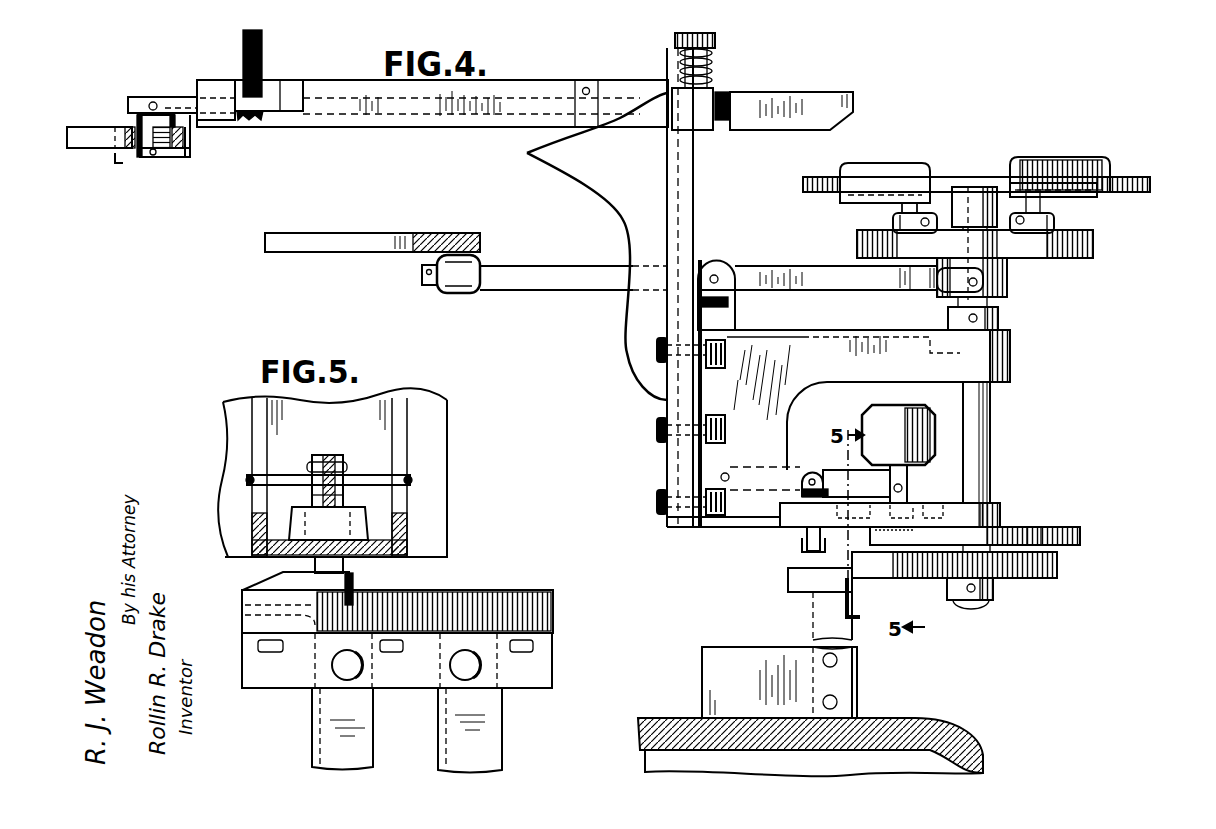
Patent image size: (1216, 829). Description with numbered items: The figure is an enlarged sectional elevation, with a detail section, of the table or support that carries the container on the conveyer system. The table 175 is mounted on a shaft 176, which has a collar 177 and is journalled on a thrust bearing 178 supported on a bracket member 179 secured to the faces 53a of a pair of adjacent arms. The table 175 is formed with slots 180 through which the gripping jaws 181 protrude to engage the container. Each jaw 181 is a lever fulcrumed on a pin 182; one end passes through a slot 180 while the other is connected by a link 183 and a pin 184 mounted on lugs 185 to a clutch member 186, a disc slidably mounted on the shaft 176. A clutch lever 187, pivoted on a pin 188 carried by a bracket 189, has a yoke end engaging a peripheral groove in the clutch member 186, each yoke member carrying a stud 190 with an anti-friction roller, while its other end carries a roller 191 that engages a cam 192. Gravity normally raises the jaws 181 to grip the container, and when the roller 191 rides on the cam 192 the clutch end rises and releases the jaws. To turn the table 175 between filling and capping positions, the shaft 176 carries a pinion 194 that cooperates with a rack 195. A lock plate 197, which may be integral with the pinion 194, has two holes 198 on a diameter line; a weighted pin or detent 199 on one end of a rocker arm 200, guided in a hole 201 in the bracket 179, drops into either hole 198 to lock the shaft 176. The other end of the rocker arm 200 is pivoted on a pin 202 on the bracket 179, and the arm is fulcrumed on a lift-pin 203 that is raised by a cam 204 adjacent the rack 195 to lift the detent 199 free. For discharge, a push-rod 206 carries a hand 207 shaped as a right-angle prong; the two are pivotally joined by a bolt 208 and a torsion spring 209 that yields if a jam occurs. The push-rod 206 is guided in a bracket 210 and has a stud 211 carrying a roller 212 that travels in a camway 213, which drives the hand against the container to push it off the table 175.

In FIG. 4, the faces of arms 53a is at (667, 462).
In FIG. 4, the table 175 is at (1150, 178).
In FIG. 4, the shaft 176 is at (978, 450).
In FIG. 4, the collar 177 is at (998, 318).
In FIG. 4, the thrust bearing 178 is at (1010, 360).
In FIG. 4, the bracket member 179 is at (852, 338).
In FIG. 5, the bracket member 179 is at (400, 412).
In FIG. 4, the slots 180 is at (840, 172).
In FIG. 4, the jaws 181 is at (1040, 157).
In FIG. 4, the pins 182 is at (1097, 191).
In FIG. 4, the link 183 is at (1040, 205).
In FIG. 4, the pin 184 is at (1022, 227).
In FIG. 4, the lugs 185 is at (1054, 222).
In FIG. 4, the clutch member 186 is at (1093, 243).
In FIG. 4, the clutch lever 187 is at (770, 278).
In FIG. 4, the pin 188 is at (716, 274).
In FIG. 4, the bracket 189 is at (735, 303).
In FIG. 4, the stud 190 is at (983, 282).
In FIG. 4, the roller 191 is at (460, 293).
In FIG. 4, the cam 192 is at (480, 243).
In FIG. 4, the pinion 194 is at (1057, 566).
In FIG. 4, the rack 195 is at (884, 565).
In FIG. 5, the rack 195 is at (553, 609).
In FIG. 4, the lock plate 197 is at (1080, 535).
In FIG. 4, the holes 198 is at (1036, 530).
In FIG. 4, the weighted pin 199 is at (881, 420).
In FIG. 4, the rocker arm 200 is at (801, 471).
In FIG. 5, the rocker arm 200 is at (330, 455).
In FIG. 4, the hole 201 is at (900, 516).
In FIG. 4, the pin 202 is at (726, 473).
In FIG. 5, the pin 202 is at (252, 477).
In FIG. 4, the lift-pin 203 is at (806, 540).
In FIG. 5, the lift-pin 203 is at (315, 563).
In FIG. 4, the cam 204 is at (802, 548).
In FIG. 5, the cam 204 is at (353, 580).
In FIG. 4, the push-rod 206 is at (186, 100).
In FIG. 4, the hand 207 is at (793, 100).
In FIG. 4, the bolt 208 is at (715, 41).
In FIG. 4, the torsion spring 209 is at (712, 70).
In FIG. 4, the bracket 210 is at (497, 128).
In FIG. 4, the stud 211 is at (137, 118).
In FIG. 4, the roller 212 is at (190, 136).
In FIG. 4, the camway 213 is at (175, 156).